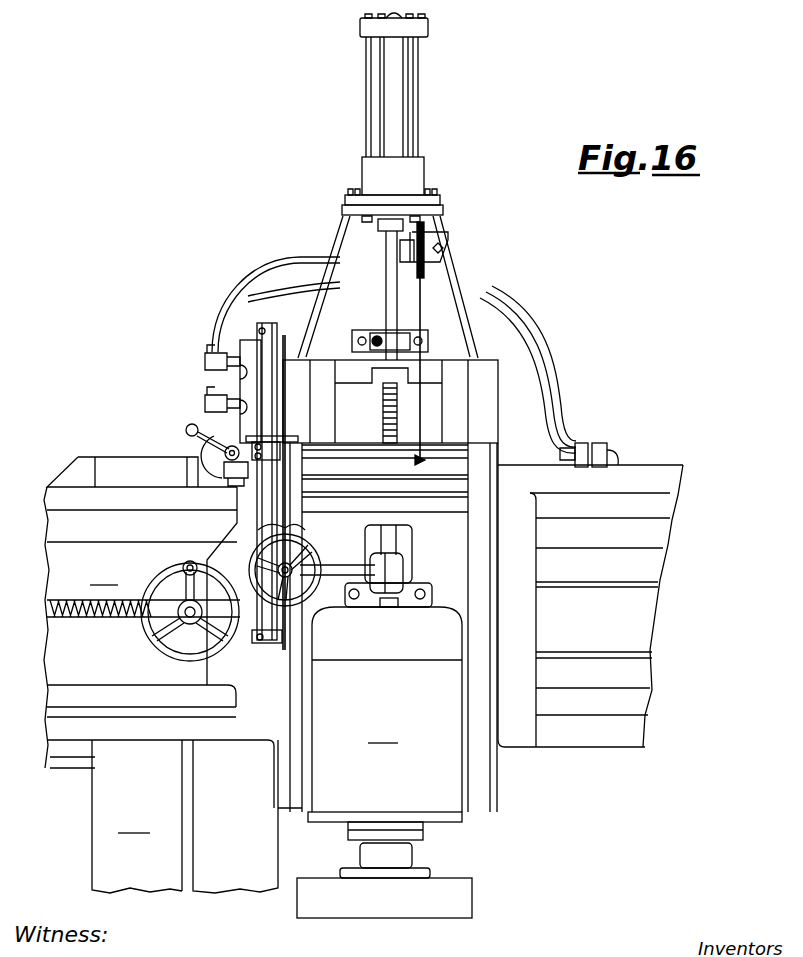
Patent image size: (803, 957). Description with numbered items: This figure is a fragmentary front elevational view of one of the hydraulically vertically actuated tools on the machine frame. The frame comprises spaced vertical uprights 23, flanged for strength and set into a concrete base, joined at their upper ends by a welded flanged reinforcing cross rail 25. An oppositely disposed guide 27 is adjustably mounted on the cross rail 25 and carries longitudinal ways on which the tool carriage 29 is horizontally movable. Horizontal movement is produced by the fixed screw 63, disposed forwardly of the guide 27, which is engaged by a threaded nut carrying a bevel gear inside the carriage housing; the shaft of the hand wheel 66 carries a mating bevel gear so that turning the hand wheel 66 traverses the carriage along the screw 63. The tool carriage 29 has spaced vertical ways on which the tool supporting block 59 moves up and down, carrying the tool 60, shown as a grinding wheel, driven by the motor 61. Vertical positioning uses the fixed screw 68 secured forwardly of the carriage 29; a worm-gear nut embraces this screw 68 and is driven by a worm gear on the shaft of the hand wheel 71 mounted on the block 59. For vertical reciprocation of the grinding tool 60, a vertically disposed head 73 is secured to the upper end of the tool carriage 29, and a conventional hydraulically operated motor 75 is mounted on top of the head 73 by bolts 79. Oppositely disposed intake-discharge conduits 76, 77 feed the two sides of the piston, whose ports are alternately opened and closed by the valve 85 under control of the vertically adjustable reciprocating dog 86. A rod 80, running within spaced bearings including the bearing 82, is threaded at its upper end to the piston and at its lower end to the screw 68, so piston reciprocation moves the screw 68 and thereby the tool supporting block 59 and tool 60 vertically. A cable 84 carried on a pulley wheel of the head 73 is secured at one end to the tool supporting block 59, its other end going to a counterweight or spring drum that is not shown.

The upright 23 is at (185, 816).
The cross rail 25 is at (632, 478).
The guide 27 is at (173, 632).
The tool carriage 29 is at (485, 384).
The tool supporting block 59 is at (512, 518).
The tool 60 is at (405, 903).
The motor 61 is at (385, 730).
The fixed screw 63 is at (86, 615).
The hand wheel 66 is at (168, 652).
The fixed screw 68 is at (383, 425).
The hand wheel 71 is at (306, 542).
The head 73 is at (352, 246).
The hydraulically operated motor 75 is at (395, 108).
The intake-discharge conduit 76 is at (258, 296).
The intake-discharge conduit 77 is at (280, 262).
The bolts 79 is at (432, 194).
The rod 80 is at (392, 300).
The bearing 82 is at (382, 338).
The cable 84 is at (422, 310).
The valve 85 is at (185, 427).
The dog 86 is at (262, 440).